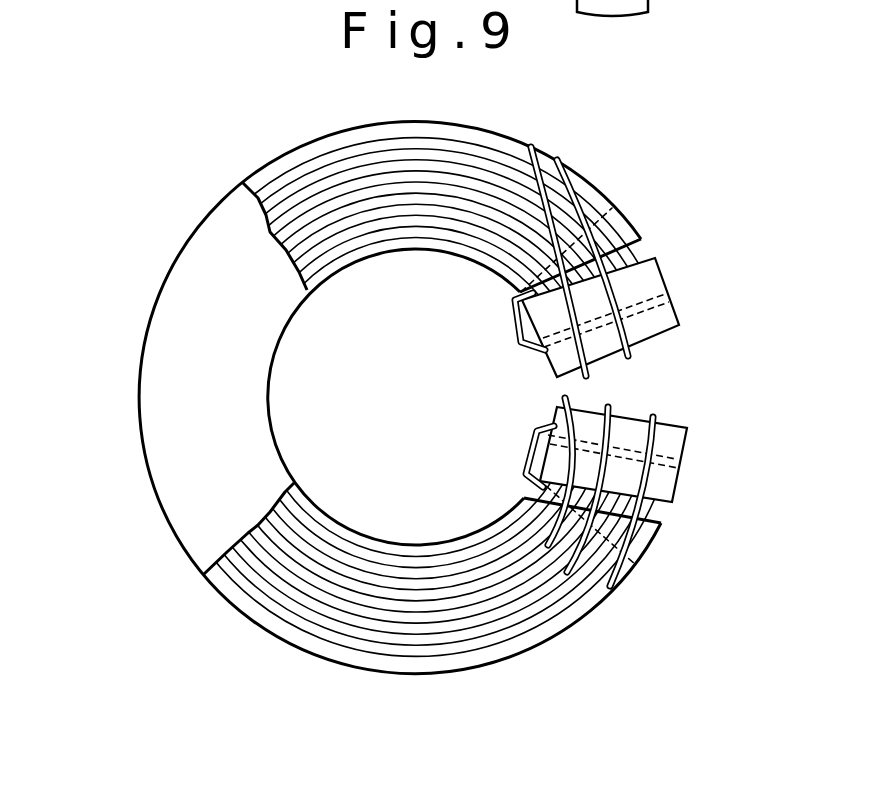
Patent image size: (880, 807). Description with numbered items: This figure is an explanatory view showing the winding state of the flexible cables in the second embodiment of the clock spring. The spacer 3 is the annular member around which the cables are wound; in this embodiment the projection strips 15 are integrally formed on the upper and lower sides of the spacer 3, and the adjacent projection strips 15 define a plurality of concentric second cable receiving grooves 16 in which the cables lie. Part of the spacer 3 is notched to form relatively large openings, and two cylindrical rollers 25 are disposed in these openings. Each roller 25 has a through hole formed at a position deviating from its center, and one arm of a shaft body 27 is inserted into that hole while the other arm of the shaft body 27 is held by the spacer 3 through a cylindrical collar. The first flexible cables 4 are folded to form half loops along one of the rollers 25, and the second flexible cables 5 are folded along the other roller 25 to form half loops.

The spacer 3 is at (147, 303).
The first flexible cables 4 is at (513, 219).
The second flexible cables 5 is at (622, 600).
The projection strips 15 is at (282, 178).
The second cable receiving grooves 16 is at (317, 172).
The cylindrical rollers 25 is at (653, 277).
The shaft body 27 is at (517, 318).